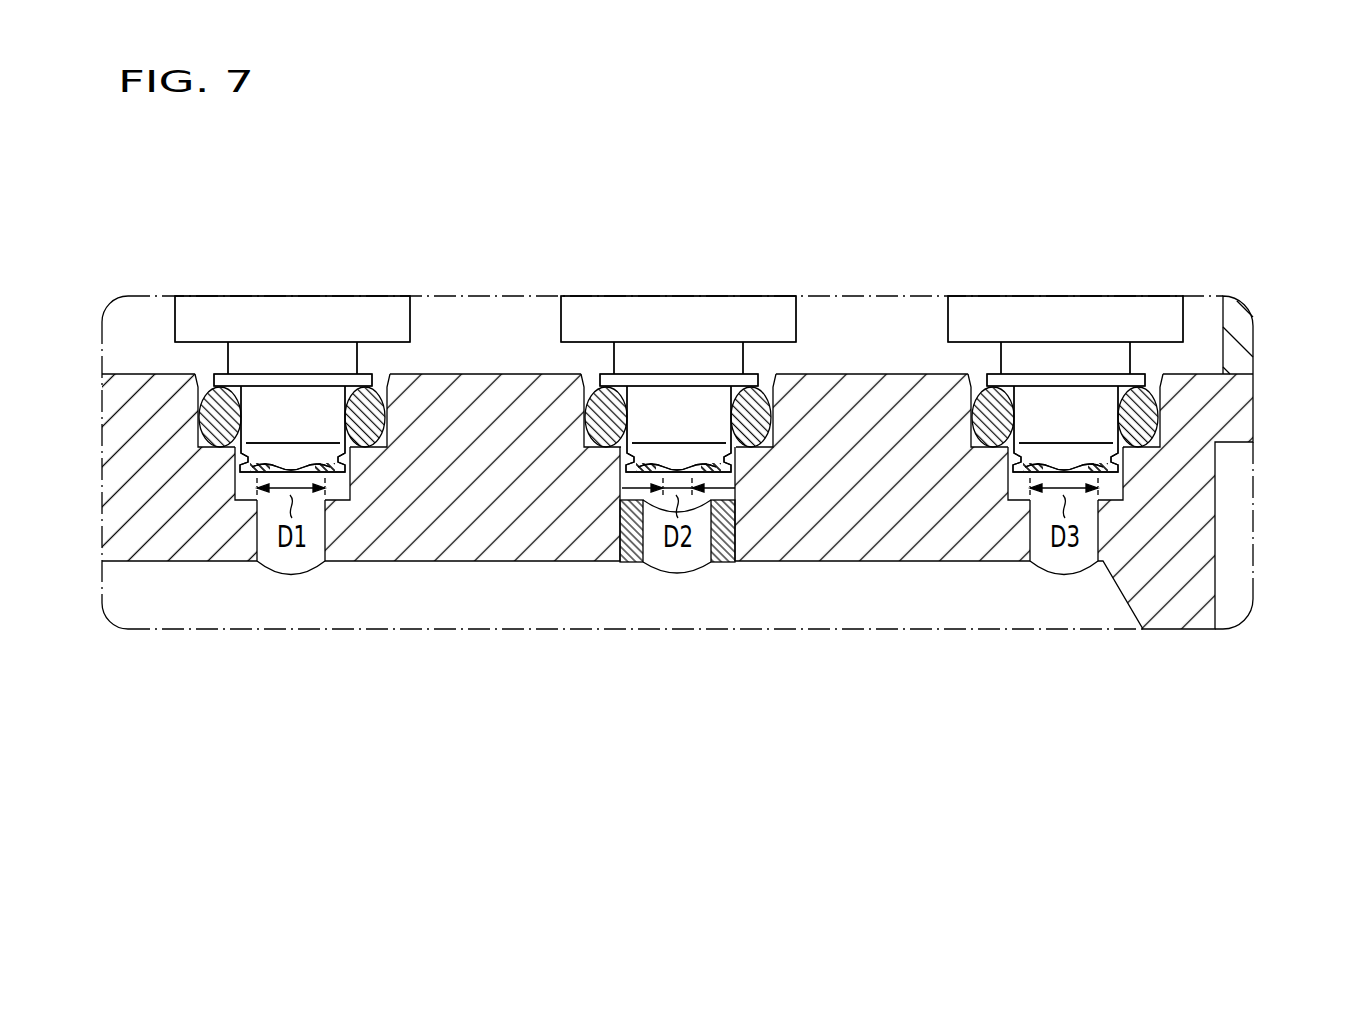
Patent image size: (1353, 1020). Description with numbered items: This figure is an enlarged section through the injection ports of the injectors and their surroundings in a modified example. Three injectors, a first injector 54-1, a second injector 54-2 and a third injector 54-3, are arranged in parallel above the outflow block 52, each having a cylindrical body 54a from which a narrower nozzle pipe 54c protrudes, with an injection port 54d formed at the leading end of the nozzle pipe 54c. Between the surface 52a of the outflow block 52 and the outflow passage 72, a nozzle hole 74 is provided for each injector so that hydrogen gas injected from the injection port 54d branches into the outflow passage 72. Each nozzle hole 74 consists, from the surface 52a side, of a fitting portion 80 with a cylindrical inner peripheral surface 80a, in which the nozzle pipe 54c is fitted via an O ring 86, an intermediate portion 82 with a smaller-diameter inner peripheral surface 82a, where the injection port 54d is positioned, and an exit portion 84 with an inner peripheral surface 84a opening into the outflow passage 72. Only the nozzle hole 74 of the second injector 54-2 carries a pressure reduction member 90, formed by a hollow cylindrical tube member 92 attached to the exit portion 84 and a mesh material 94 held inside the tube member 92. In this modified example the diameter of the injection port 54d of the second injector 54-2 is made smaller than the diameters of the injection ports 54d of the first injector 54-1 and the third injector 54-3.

The outflow block 52 is at (718, 462).
The surface 52a is at (1190, 377).
The first injector 54-1 is at (1043, 332).
The second injector 54-2 is at (677, 333).
The third injector 54-3 is at (280, 328).
The body 54a is at (241, 333).
The nozzle pipe 54c is at (309, 434).
The injection port 54d is at (316, 470).
The outflow passage 72 is at (527, 613).
The nozzle hole 74 is at (672, 609).
The fitting portion 80 is at (671, 579).
The inner peripheral surface 80a is at (994, 431).
The intermediate portion 82 is at (679, 615).
The inner peripheral surface 82a is at (1011, 485).
The exit portion 84 is at (716, 642).
The inner peripheral surface 84a is at (1140, 723).
The O ring 86 is at (375, 388).
The pressure reduction member 90 is at (770, 626).
The tube member 92 is at (735, 508).
The mesh material 94 is at (725, 520).